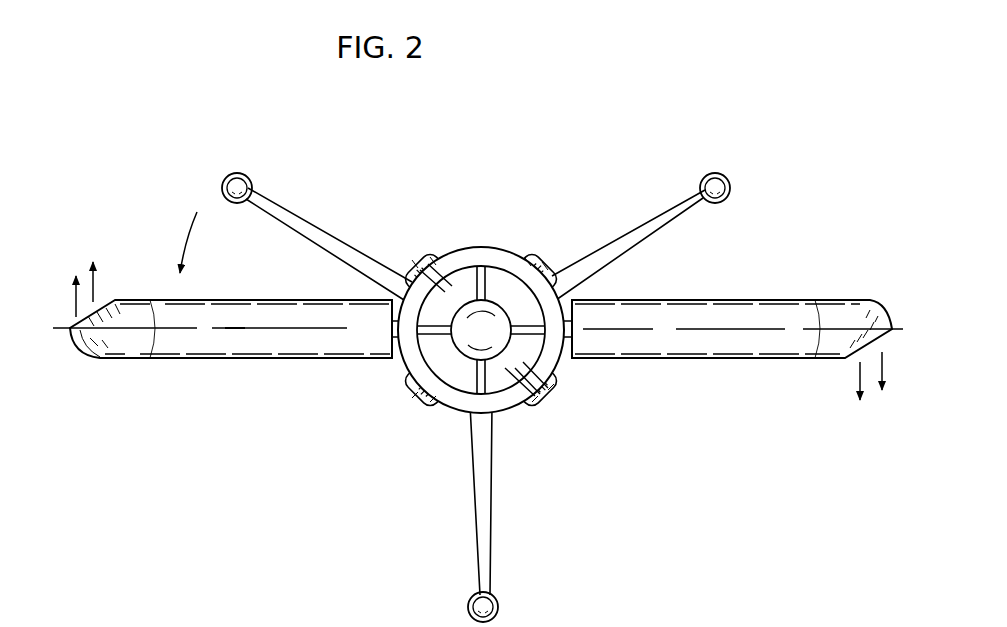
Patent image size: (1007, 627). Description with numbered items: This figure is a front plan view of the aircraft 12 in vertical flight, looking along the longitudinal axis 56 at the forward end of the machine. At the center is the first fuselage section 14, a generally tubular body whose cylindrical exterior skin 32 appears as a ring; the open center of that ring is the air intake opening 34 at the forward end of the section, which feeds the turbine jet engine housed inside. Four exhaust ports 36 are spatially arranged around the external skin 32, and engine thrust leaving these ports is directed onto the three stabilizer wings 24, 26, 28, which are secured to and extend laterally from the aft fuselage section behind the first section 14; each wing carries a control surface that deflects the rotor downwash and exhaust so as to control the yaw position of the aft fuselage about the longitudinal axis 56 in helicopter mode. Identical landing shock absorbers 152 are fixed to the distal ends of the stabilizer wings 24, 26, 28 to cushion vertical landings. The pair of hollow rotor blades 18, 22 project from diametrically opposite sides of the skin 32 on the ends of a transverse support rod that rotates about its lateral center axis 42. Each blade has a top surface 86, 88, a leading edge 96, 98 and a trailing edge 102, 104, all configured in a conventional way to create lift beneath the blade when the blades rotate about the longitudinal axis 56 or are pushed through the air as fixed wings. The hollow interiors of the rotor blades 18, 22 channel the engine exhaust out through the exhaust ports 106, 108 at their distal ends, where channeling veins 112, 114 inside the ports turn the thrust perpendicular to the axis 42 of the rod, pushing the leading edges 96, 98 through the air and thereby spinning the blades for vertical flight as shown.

The aircraft 12 is at (559, 118).
The first fuselage section 14 is at (458, 418).
The rotor blade 18 is at (287, 340).
The rotor blade 22 is at (694, 350).
The stabilizer wing 24 is at (482, 525).
The stabilizer wing 26 is at (300, 218).
The stabilizer wing 28 is at (625, 235).
The cylindrical exterior skin 32 is at (475, 255).
The air intake opening 34 is at (436, 352).
The exhaust ports 36 is at (425, 262).
The center axis 42 is at (233, 326).
The longitudinal axis 56 is at (483, 335).
The top surface 86 is at (175, 350).
The top surface 88 is at (763, 448).
The leading edge 96 is at (232, 360).
The leading edge 98 is at (695, 300).
The trailing edge 102 is at (287, 300).
The trailing edge 104 is at (632, 360).
The exhaust port 106 is at (107, 287).
The exhaust port 108 is at (852, 363).
The channeling vein 112 is at (80, 365).
The channeling vein 114 is at (868, 300).
The landing shock absorbers 152 is at (243, 178).